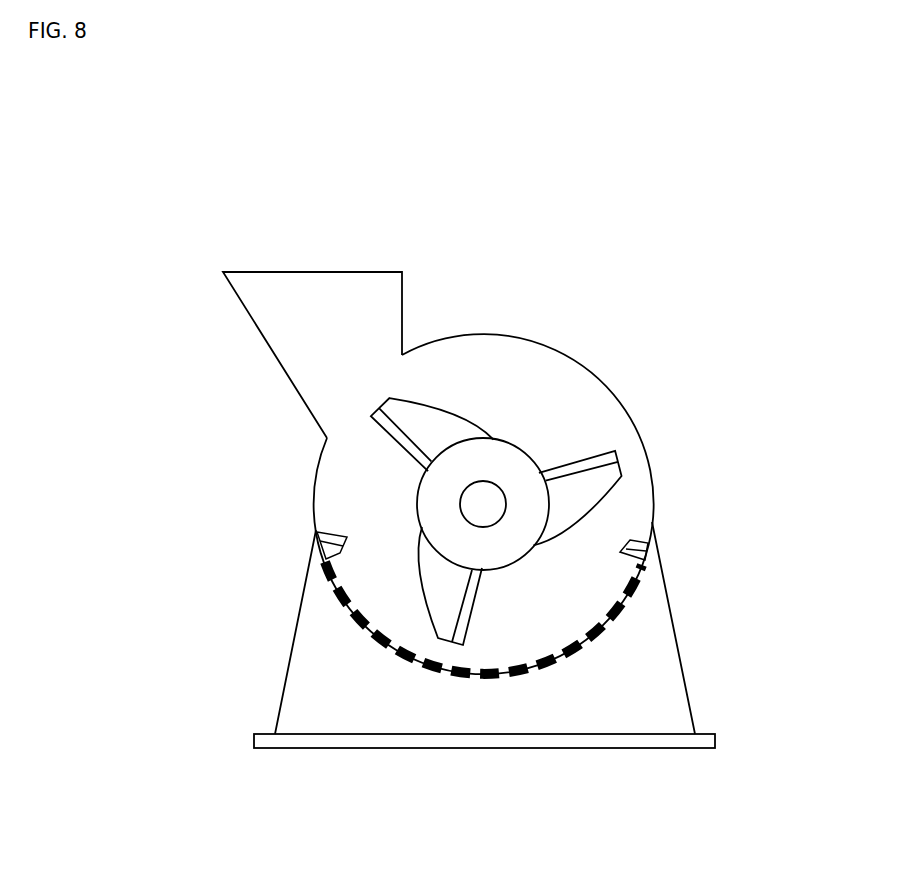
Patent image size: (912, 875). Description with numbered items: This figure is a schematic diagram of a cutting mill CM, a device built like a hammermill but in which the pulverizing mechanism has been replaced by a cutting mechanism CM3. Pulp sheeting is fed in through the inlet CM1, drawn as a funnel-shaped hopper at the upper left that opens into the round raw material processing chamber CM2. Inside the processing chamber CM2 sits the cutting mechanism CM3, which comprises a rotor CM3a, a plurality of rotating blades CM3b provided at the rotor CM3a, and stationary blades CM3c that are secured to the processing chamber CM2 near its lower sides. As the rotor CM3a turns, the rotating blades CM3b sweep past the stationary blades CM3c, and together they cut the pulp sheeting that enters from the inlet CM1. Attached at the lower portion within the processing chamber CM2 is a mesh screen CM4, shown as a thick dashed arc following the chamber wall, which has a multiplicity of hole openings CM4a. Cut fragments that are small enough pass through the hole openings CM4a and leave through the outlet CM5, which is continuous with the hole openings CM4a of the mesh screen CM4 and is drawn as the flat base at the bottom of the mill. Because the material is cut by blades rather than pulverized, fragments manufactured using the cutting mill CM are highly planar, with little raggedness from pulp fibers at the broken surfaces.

The cutting mill CM is at (470, 166).
The inlet CM1 is at (297, 272).
The processing chamber CM2 is at (558, 348).
The cutting mechanism CM3 is at (767, 503).
The rotor CM3a is at (523, 482).
The rotating blade CM3b is at (595, 486).
The stationary blade CM3c is at (316, 530).
The mesh screen CM4 is at (538, 670).
The hole opening CM4a is at (518, 673).
The outlet CM5 is at (350, 748).